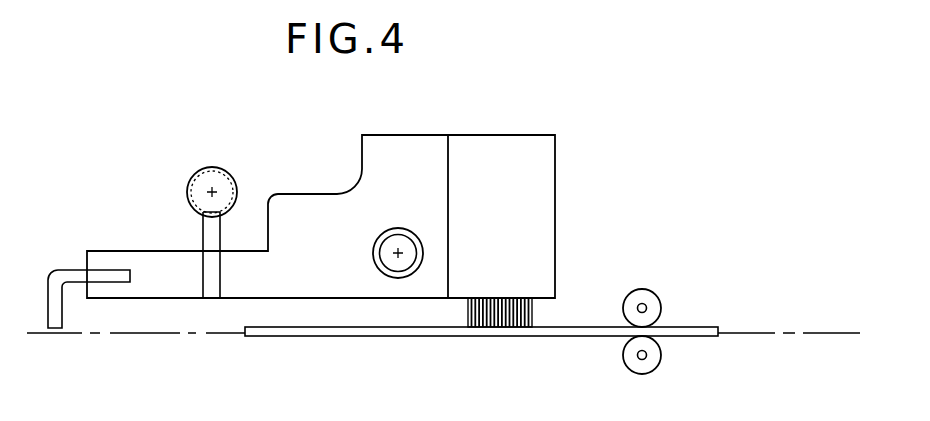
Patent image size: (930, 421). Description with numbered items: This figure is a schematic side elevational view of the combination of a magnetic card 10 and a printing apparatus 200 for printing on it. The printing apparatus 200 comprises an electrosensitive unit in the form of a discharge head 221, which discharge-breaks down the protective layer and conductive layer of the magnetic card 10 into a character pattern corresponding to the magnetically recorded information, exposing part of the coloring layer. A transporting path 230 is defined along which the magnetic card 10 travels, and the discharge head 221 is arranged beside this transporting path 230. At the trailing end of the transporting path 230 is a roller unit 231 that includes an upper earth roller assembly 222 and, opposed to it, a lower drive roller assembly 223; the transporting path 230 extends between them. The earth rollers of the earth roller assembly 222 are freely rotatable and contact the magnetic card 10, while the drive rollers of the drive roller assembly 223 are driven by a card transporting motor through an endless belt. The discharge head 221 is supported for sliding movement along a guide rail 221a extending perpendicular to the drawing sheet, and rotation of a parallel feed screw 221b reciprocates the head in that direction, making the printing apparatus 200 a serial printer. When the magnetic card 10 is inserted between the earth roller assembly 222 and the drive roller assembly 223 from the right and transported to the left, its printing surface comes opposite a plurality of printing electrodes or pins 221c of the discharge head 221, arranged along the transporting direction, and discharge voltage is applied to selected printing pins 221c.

The printing apparatus 200 is at (231, 147).
The discharge head 221 is at (547, 188).
The guide rail 221a is at (397, 268).
The feed screw 221b is at (187, 198).
The printing electrodes or pins 221c is at (530, 315).
The earth roller assembly 222 is at (660, 297).
The drive roller assembly 223 is at (650, 366).
The roller unit 231 is at (653, 275).
The magnetic card 10 is at (262, 336).
The transporting path 230 is at (148, 333).